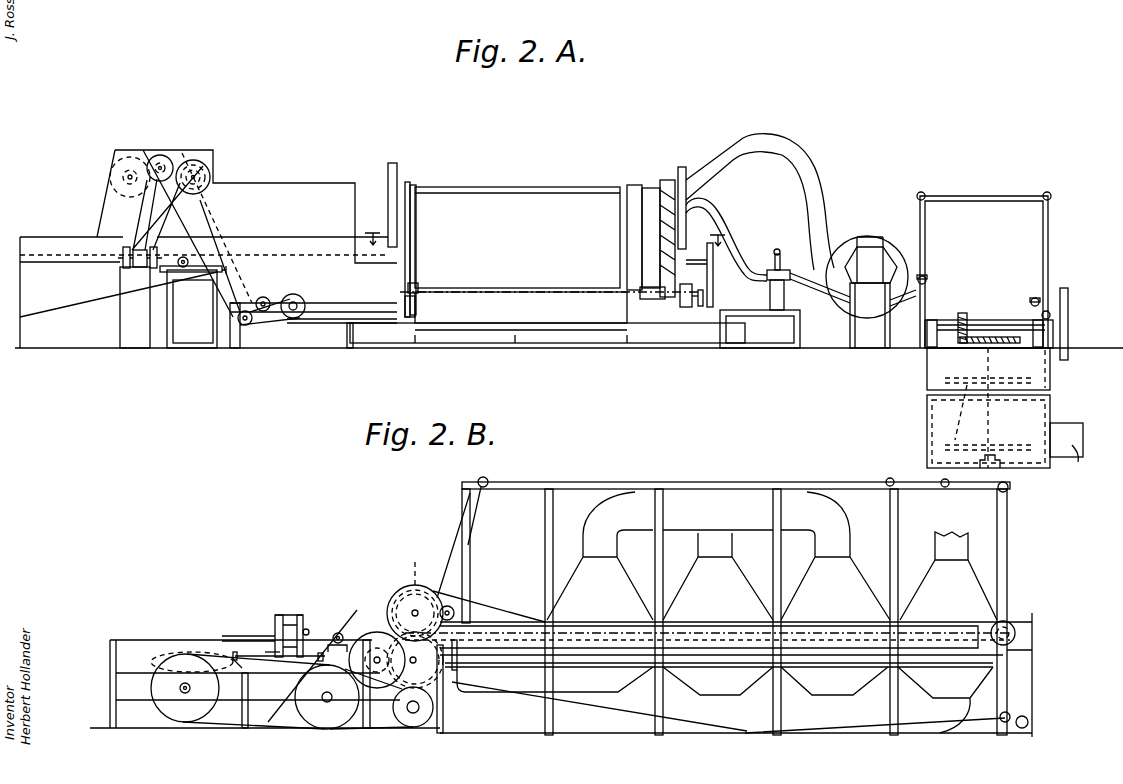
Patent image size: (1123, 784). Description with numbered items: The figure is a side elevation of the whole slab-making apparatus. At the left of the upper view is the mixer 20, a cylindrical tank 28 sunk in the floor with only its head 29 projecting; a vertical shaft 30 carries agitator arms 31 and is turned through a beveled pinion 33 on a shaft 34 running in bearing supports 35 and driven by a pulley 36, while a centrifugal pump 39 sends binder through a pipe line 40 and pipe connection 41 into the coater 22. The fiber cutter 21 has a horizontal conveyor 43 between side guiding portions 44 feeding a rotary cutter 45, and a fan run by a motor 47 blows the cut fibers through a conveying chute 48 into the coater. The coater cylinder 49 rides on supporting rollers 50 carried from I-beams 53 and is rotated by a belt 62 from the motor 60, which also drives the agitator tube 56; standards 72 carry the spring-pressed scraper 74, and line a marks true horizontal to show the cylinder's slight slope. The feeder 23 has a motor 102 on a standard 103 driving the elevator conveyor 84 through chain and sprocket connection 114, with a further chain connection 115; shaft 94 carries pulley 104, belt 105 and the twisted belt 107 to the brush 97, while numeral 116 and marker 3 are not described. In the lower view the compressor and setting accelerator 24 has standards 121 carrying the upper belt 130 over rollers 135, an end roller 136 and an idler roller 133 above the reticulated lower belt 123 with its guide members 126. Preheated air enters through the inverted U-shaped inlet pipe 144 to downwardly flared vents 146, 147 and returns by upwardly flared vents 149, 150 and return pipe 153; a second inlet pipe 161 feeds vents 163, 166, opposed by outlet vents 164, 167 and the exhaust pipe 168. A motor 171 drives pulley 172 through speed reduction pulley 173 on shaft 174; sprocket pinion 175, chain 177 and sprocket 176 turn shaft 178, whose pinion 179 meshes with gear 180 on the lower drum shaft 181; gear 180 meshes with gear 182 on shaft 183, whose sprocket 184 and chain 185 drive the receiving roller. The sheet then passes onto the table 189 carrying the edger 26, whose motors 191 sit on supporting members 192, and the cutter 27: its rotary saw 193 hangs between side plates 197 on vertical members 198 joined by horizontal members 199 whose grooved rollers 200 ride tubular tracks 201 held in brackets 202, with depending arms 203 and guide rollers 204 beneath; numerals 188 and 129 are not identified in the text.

In FIG. 2A, the guide members 126 is at (50, 237).
In FIG. 2A, the reticulated belt 123 is at (62, 308).
In FIG. 2B, the reticulated belt 123 is at (592, 708).
In FIG. 2A, the standard 103 is at (120, 276).
In FIG. 2A, the feeder 23 is at (250, 184).
In FIG. 2A, the brush 97 is at (110, 179).
In FIG. 2A, the belt 107 is at (166, 156).
In FIG. 2A, the pulley 104 is at (199, 163).
In FIG. 2A, the shaft 94 is at (207, 172).
In FIG. 2A, the chain and sprocket connection 114 is at (140, 208).
In FIG. 2A, the belt 105 is at (203, 205).
In FIG. 2A, the elevator conveyor 84 is at (232, 244).
In FIG. 2A, the motor 102 is at (123, 253).
In FIG. 2A, the chain and sprocket connection 115 is at (263, 297).
In FIG. 2A, the roller 116 is at (294, 294).
In FIG. 2A, the supporting standard 72 is at (682, 167).
In FIG. 2A, the section line 3 is at (545, 231).
In FIG. 2A, the angle iron scraper 74 is at (413, 192).
In FIG. 2A, the cylinder 49 is at (510, 196).
In FIG. 2A, the coater 22 is at (566, 186).
In FIG. 2A, the belt 62 is at (628, 216).
In FIG. 2A, the line a is at (586, 293).
In FIG. 2A, the supporting rollers 50 is at (416, 288).
In FIG. 2A, the I-beams 53 is at (538, 323).
In FIG. 2A, the motor 60 is at (683, 308).
In FIG. 2A, the hollow rod or tube 56 is at (694, 265).
In FIG. 2A, the conveying chute 48 is at (747, 142).
In FIG. 2A, the pipe connection 41 is at (726, 239).
In FIG. 2A, the horizontal conveyor 43 is at (780, 262).
In FIG. 2A, the rotary cutter 45 is at (866, 273).
In FIG. 2A, the side guiding portions 44 is at (866, 252).
In FIG. 2A, the motor 47 is at (848, 240).
In FIG. 2A, the vegetable fiber chopper 21 is at (846, 338).
In FIG. 2A, the pipe line 40 is at (980, 197).
In FIG. 2A, the bearing supports 35 is at (1036, 321).
In FIG. 2A, the shaft 34 is at (988, 325).
In FIG. 2A, the beveled pinion 33 is at (963, 313).
In FIG. 2A, the pulley 36 is at (1068, 316).
In FIG. 2A, the head 29 is at (925, 348).
In FIG. 2A, the mixer 20 is at (921, 416).
In FIG. 2A, the arms 31 is at (961, 412).
In FIG. 2A, the vertical shaft 30 is at (994, 430).
In FIG. 2A, the cylindrical tank 28 is at (1056, 416).
In FIG. 2A, the centrifugal pump 39 is at (1078, 461).
In FIG. 2B, the upper belt 130 is at (531, 482).
In FIG. 2B, the combined compressor and setting accelerator 24 is at (661, 478).
In FIG. 2B, the inverted U-shaped inlet pipe 144 is at (701, 490).
In FIG. 2B, the downwardly flared vent 146 is at (586, 570).
In FIG. 2B, the return pipe 153 is at (718, 540).
In FIG. 2B, the downwardly flared outlet vent 164 is at (731, 580).
In FIG. 2B, the downwardly flared vent 147 is at (852, 576).
In FIG. 2B, the downwardly flared outlet vent 167 is at (931, 580).
In FIG. 2B, the exhaust pipe 168 is at (956, 540).
In FIG. 2B, the rail 188 is at (1006, 712).
In FIG. 2B, the standards 121 is at (897, 521).
In FIG. 2B, the supporting rollers 135 is at (940, 482).
In FIG. 2B, the end roller 136 is at (1008, 488).
In FIG. 2B, the gear 180 is at (437, 672).
In FIG. 2B, the shaft 181 is at (418, 660).
In FIG. 2B, the upwardly flared vent 149 is at (616, 681).
In FIG. 2B, the upwardly flared vent 163 is at (760, 676).
In FIG. 2B, the upwardly flared vent 150 is at (856, 690).
In FIG. 2B, the upwardly flared inlet vent 166 is at (968, 690).
In FIG. 2B, the U-shaped inlet pipe 161 is at (860, 734).
In FIG. 2B, the roller 129 is at (1028, 722).
In FIG. 2B, the extension supporting table 189 is at (110, 655).
In FIG. 2B, the speed reduction pulley 173 is at (160, 712).
In FIG. 2B, the shaft 174 is at (327, 697).
In FIG. 2B, the pulley 172 is at (318, 703).
In FIG. 2B, the sprocket pinion 175 is at (335, 729).
In FIG. 2B, the sprocket 176 is at (395, 700).
In FIG. 2B, the motor 171 is at (421, 712).
In FIG. 2B, the chain 177 is at (375, 660).
In FIG. 2B, the pinion 179 is at (374, 668).
In FIG. 2B, the shaft 178 is at (390, 672).
In FIG. 2B, the shaft 183 is at (415, 613).
In FIG. 2B, the gear 182 is at (420, 591).
In FIG. 2B, the sprocket 184 is at (410, 573).
In FIG. 2B, the idler roller 133 is at (455, 613).
In FIG. 2B, the chain 185 is at (505, 612).
In FIG. 2B, the motor 191 is at (339, 633).
In FIG. 2B, the edger 26 is at (346, 624).
In FIG. 2B, the inverted U-shaped supporting member 192 is at (351, 634).
In FIG. 2B, the side plates 197 is at (284, 615).
In FIG. 2B, the vertical members 198 is at (300, 615).
In FIG. 2B, the slab cutter 27 is at (275, 622).
In FIG. 2B, the horizontal members 199 is at (270, 641).
In FIG. 2B, the rotary saw 193 is at (307, 631).
In FIG. 2B, the brackets 202 is at (235, 655).
In FIG. 2B, the peripherally grooved rollers 200 is at (318, 652).
In FIG. 2B, the tubular tracks 201 is at (280, 670).
In FIG. 2B, the depending arms 203 is at (318, 670).
In FIG. 2B, the guide rollers 204 is at (291, 712).